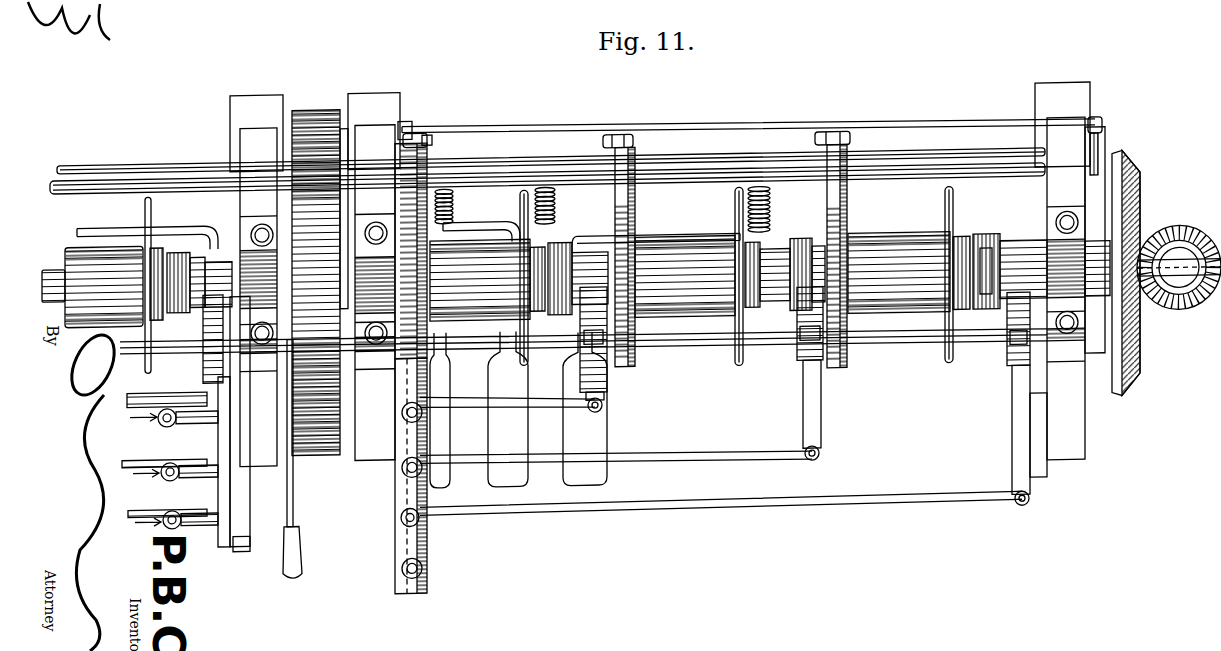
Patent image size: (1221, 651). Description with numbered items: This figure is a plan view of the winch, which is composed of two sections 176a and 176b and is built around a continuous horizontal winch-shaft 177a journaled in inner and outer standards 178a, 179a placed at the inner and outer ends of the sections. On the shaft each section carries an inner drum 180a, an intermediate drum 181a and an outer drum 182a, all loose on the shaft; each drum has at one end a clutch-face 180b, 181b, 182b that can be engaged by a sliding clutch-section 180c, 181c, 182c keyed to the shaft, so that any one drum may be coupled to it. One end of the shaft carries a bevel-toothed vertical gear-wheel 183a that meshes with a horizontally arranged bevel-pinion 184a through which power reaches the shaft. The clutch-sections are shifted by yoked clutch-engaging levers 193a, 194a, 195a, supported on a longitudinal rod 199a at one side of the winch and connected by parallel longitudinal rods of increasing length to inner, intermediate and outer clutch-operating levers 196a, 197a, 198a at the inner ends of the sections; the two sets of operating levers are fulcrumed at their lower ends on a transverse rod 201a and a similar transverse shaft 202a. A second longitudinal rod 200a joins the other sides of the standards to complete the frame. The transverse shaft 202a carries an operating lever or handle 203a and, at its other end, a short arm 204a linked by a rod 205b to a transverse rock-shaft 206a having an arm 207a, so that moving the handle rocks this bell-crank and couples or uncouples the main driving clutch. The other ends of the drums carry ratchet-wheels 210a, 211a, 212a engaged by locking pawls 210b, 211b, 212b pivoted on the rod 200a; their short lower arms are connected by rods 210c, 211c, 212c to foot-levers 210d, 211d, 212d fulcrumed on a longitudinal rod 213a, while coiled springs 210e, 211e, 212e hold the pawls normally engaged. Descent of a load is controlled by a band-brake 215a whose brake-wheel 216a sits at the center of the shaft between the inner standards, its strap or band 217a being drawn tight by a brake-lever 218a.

The winch section 176a is at (917, 91).
The winch section 176b is at (132, 119).
The horizontal winch-shaft 177a is at (1187, 301).
The inner standard 178a is at (243, 121).
The outer standard 179a is at (1047, 108).
The inner drum 180a is at (80, 222).
The clutch-face 180b is at (158, 275).
The sliding clutch-section 180c is at (178, 242).
The intermediate drum 181a is at (690, 244).
The clutch-face 181b is at (740, 261).
The sliding clutch-section 181c is at (780, 253).
The outer drum 182a is at (907, 233).
The clutch-face 182b is at (962, 274).
The sliding clutch-section 182c is at (992, 244).
The vertical gear-wheel 183a is at (1143, 186).
The bevel-pinion 184a is at (1163, 234).
The inner clutch-engaging lever 193a is at (592, 300).
The intermediate clutch-engaging lever 194a is at (808, 324).
The outer clutch-engaging lever 195a is at (1012, 308).
The inner clutch-operating lever 196a is at (415, 395).
The intermediate clutch-operating lever 197a is at (402, 468).
The outer clutch-operating lever 198a is at (403, 511).
The longitudinal rod 199a is at (660, 347).
The longitudinal rod 200a is at (145, 172).
The transverse rod 201a is at (247, 546).
The transverse shaft 202a is at (415, 602).
The operating lever 203a is at (423, 567).
The short arm 204a is at (406, 124).
The rod 205b is at (746, 125).
The transverse rock-shaft 206a is at (1098, 161).
The arm 207a is at (1102, 134).
The ratchet-wheel 210a is at (390, 251).
The locking pawl 210b is at (408, 131).
The rod 210c is at (428, 134).
The foot-lever 210d is at (447, 479).
The coiled spring 210e is at (453, 201).
The ratchet-wheel 211a is at (633, 279).
The locking pawl 211b is at (616, 134).
The rod 211c is at (602, 136).
The foot-lever 211d is at (513, 475).
The coiled spring 211e is at (553, 187).
The ratchet-wheel 212a is at (845, 354).
The locking pawl 212b is at (830, 136).
The rod 212c is at (822, 137).
The foot-lever 212d is at (582, 473).
The coiled spring 212e is at (765, 190).
The longitudinal rod 213a is at (92, 157).
The band-brake 215a is at (312, 96).
The brake-wheel 216a is at (341, 122).
The strap or band 217a is at (286, 92).
The brake-lever 218a is at (294, 500).